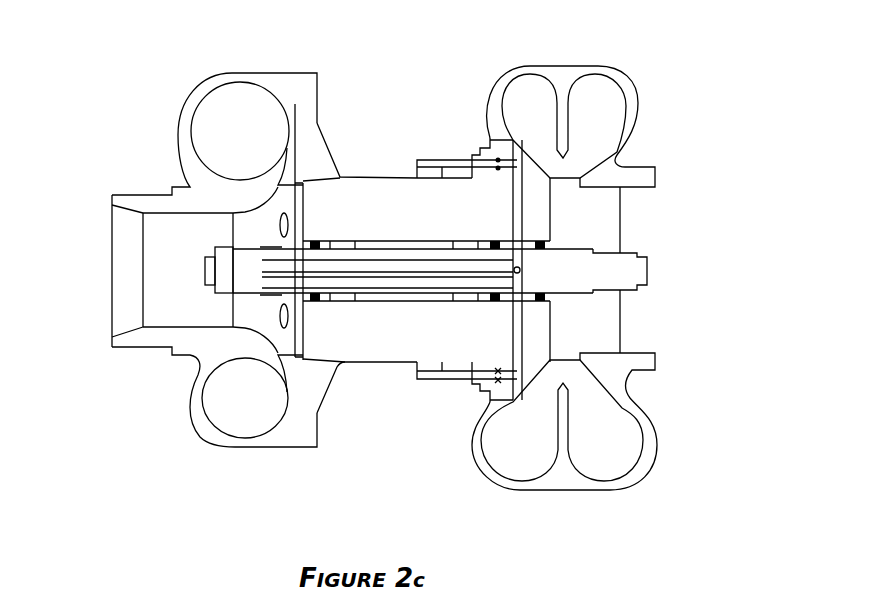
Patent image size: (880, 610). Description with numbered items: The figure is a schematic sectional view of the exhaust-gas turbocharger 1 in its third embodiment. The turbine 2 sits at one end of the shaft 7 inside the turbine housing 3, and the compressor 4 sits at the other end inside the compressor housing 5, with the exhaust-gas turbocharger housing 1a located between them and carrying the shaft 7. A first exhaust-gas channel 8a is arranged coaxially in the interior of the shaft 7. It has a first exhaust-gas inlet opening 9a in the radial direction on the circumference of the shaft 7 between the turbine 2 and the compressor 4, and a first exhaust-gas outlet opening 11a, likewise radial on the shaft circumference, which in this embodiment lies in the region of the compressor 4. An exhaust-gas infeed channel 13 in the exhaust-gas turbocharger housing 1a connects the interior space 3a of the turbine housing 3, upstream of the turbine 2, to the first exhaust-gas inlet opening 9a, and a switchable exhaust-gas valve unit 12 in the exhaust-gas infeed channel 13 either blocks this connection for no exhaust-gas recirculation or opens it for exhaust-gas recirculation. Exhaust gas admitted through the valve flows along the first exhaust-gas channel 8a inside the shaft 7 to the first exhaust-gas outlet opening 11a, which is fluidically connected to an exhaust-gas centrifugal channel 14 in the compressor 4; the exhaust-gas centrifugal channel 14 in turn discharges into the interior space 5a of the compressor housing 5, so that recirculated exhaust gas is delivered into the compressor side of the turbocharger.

The exhaust-gas turbocharger 1 is at (668, 48).
The exhaust-gas turbocharger housing 1a is at (387, 207).
The turbine 2 is at (612, 232).
The turbine housing 3 is at (632, 362).
The interior space of the turbine housing 3a is at (607, 115).
The compressor 4 is at (250, 236).
The compressor housing 5 is at (200, 193).
The interior space of the compressor housing 5a is at (213, 142).
The shaft 7 is at (188, 273).
The first exhaust-gas channel 8a is at (323, 307).
The first exhaust-gas inlet opening 9a is at (516, 274).
The first exhaust-gas outlet opening 11a is at (290, 272).
The switchable exhaust-gas valve unit 12 is at (467, 157).
The exhaust-gas infeed channel 13 is at (515, 235).
The exhaust-gas centrifugal channel 14 is at (301, 228).